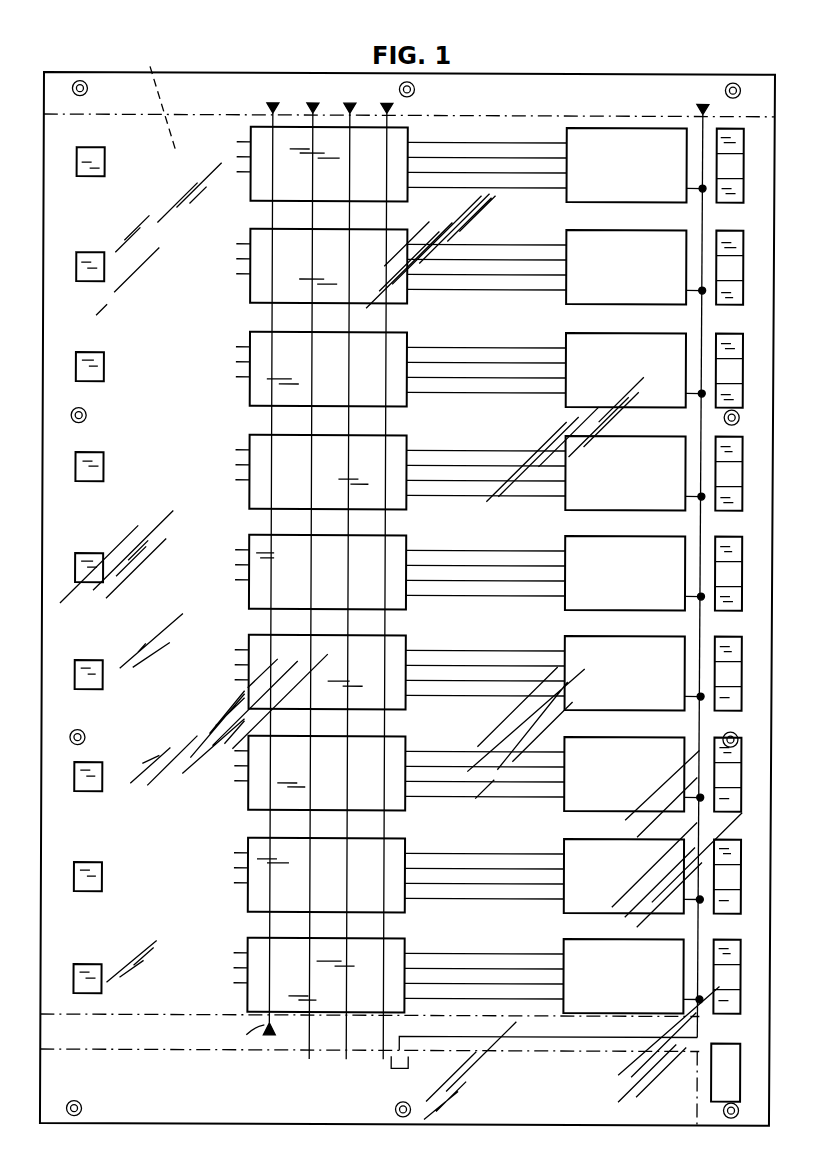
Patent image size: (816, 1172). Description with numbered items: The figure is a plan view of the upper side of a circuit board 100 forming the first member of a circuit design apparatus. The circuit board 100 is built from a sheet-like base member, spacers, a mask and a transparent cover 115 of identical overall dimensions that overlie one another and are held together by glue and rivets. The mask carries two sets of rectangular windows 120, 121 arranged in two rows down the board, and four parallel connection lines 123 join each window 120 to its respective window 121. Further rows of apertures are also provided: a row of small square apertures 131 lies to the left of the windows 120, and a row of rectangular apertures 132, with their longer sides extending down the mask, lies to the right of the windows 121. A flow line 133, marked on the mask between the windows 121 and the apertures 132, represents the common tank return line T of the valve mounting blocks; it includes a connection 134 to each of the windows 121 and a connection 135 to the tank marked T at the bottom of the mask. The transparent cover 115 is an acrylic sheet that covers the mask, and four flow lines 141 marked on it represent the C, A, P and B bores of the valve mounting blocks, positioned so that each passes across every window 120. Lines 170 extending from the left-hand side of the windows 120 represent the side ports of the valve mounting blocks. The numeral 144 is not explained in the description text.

The circuit board 100 is at (276, 68).
The transparent cover 115 is at (187, 341).
The window 120 is at (344, 194).
The window 121 is at (638, 185).
The connection line 123 is at (508, 637).
The small square aperture 131 is at (100, 164).
The rectangular aperture 132 is at (731, 244).
The flow line 133 is at (703, 319).
The connection 134 is at (703, 492).
The connection 135 is at (528, 1040).
The flow lines 141 is at (348, 794).
The section line 144 is at (147, 98).
The lines 170 is at (237, 882).